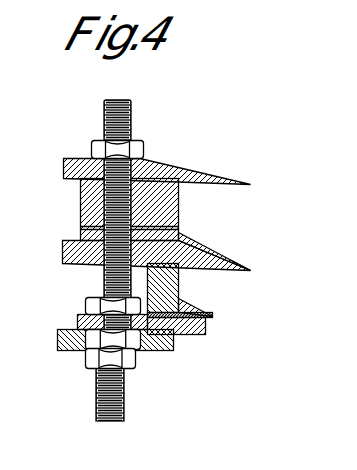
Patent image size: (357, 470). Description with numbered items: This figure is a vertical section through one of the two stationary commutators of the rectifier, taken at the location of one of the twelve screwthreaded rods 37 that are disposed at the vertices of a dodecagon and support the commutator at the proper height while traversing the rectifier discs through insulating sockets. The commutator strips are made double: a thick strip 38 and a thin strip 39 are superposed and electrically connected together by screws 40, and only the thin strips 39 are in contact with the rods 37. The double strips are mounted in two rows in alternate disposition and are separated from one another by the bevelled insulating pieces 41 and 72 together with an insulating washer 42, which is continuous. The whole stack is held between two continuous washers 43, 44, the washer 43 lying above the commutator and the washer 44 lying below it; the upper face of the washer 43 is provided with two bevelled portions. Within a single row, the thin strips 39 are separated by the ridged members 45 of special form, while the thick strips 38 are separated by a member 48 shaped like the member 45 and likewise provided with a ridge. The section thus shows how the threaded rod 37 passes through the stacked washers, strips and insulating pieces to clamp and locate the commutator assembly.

The screwthreaded rod 37 is at (90, 378).
The thick strip 38 is at (168, 270).
The thin strip 39 is at (182, 328).
The screw 40 is at (170, 290).
The bevelled insulating piece 41 is at (206, 306).
The insulating washer 42 is at (172, 226).
The upper continuous washer 43 is at (184, 162).
The lower continuous washer 44 is at (140, 344).
The separating member 45 is at (200, 236).
The separating member 48 is at (170, 200).
The bevelled insulating piece 72 is at (238, 259).